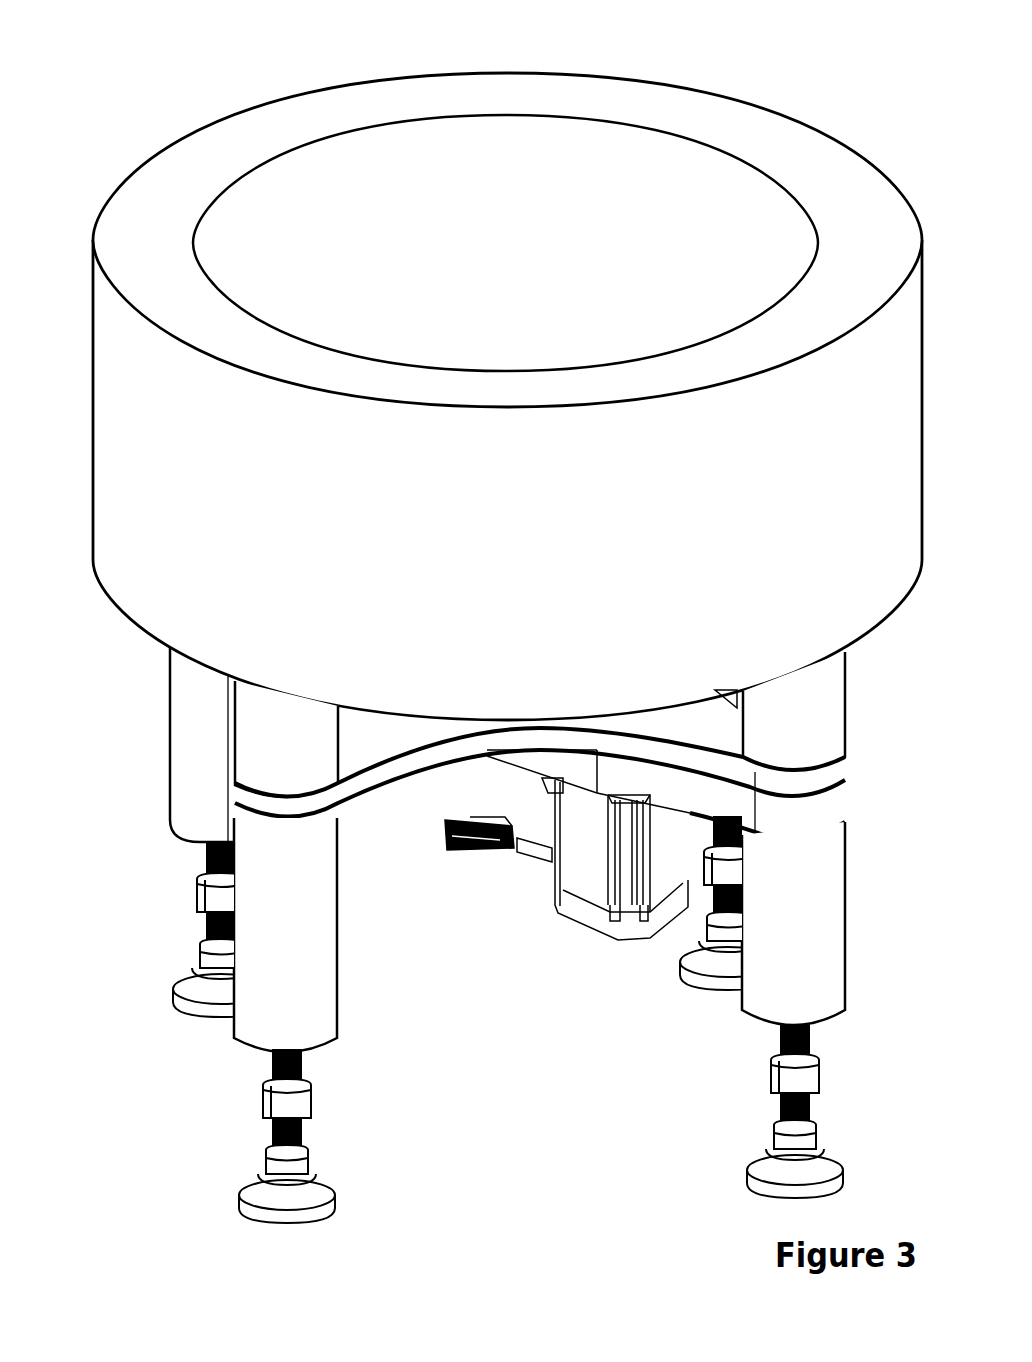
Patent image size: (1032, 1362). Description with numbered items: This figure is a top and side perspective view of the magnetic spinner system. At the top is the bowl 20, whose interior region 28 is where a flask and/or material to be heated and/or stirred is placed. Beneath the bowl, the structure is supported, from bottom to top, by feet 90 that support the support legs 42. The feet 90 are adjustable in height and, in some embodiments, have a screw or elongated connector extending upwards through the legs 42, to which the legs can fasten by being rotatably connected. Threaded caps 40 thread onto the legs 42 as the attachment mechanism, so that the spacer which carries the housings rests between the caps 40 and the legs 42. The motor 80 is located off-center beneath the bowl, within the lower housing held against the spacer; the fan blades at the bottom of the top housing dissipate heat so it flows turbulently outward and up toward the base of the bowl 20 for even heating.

The bowl 20 is at (158, 190).
The interior region 28 is at (382, 173).
The threaded cap 40 is at (273, 753).
The support leg 42 is at (277, 944).
The motor 80 is at (580, 863).
The foot 90 is at (765, 1173).